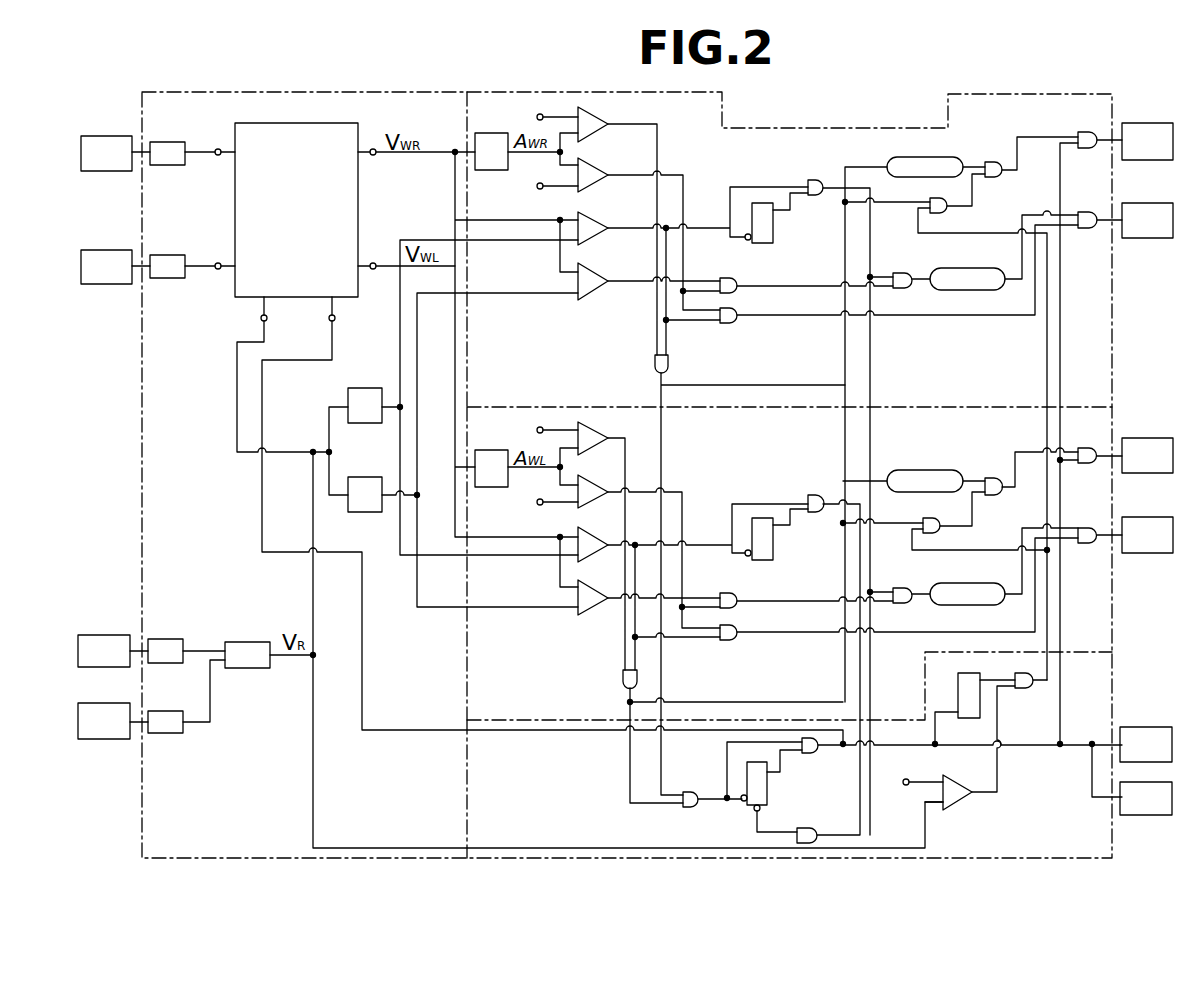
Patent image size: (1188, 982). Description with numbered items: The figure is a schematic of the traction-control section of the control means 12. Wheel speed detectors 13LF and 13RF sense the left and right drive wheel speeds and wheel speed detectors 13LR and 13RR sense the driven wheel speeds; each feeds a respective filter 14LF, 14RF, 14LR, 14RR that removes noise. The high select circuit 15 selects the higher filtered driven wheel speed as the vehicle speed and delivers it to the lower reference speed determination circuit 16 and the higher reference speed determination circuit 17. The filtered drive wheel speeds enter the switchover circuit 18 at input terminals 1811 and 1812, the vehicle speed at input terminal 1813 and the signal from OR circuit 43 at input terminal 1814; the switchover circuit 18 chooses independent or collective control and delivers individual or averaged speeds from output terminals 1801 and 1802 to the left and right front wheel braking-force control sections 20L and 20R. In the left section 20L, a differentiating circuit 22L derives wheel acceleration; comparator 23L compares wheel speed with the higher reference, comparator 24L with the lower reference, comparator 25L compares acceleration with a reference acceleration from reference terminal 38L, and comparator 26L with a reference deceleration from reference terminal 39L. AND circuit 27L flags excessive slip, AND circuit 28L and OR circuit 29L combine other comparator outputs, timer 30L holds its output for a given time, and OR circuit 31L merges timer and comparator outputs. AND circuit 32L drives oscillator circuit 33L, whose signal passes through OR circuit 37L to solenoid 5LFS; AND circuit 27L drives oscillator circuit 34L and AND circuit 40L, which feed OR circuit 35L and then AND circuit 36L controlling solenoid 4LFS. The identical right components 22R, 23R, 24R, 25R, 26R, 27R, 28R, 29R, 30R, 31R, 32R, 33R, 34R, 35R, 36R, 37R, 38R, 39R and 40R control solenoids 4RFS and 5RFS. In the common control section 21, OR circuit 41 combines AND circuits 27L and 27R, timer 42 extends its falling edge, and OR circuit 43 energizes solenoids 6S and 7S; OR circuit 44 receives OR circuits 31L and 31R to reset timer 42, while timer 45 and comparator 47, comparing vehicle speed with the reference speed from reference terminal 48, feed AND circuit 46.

The control means 12 is at (650, 866).
The wheel speed detector 13RF is at (112, 172).
The wheel speed detector 13LF is at (112, 285).
The wheel speed detector 13RR is at (122, 634).
The wheel speed detector 13LR is at (112, 740).
The filter 14RF is at (168, 165).
The filter 14LF is at (166, 278).
The filter 14RR is at (166, 639).
The filter 14LR is at (168, 733).
The high select circuit 15 is at (246, 642).
The lower reference speed determination circuit 16 is at (348, 508).
The higher reference speed determination circuit 17 is at (348, 395).
The switchover circuit 18 is at (300, 217).
The output terminal 1801 is at (373, 269).
The output terminal 1802 is at (373, 149).
The input terminal 1811 is at (216, 270).
The input terminal 1812 is at (218, 149).
The input terminal 1813 is at (261, 320).
The input terminal 1814 is at (335, 320).
The right front wheel braking-force control section 20R is at (466, 108).
The left front wheel braking-force control section 20L is at (466, 640).
The common control section 21 is at (466, 768).
The differentiating circuit 22R is at (491, 170).
The differentiating circuit 22L is at (491, 487).
The comparator 23R is at (602, 220).
The comparator 23L is at (602, 537).
The comparator 24R is at (602, 273).
The comparator 24L is at (602, 590).
The comparator 25R is at (602, 117).
The comparator 25L is at (602, 431).
The comparator 26R is at (602, 167).
The comparator 26L is at (602, 484).
The AND circuit 27R is at (670, 364).
The AND circuit 27L is at (620, 682).
The AND circuit 28R is at (738, 320).
The AND circuit 28L is at (738, 637).
The OR circuit 29R is at (738, 282).
The OR circuit 29L is at (738, 598).
The timer 30R is at (773, 238).
The timer 30L is at (773, 554).
The OR circuit 31R is at (812, 180).
The OR circuit 31L is at (812, 495).
The AND circuit 32R is at (903, 273).
The AND circuit 32L is at (900, 588).
The oscillator circuit 33R is at (965, 270).
The oscillator circuit 33L is at (958, 585).
The oscillator circuit 34R is at (915, 158).
The oscillator circuit 34L is at (915, 471).
The OR circuit 35R is at (990, 162).
The OR circuit 35L is at (990, 478).
The AND circuit 36R is at (1086, 132).
The AND circuit 36L is at (1087, 448).
The OR circuit 37R is at (1087, 212).
The OR circuit 37L is at (1087, 528).
The reference terminal 38R is at (537, 113).
The reference terminal 38L is at (537, 427).
The reference terminal 39R is at (538, 189).
The reference terminal 39L is at (538, 505).
The AND circuit 40R is at (943, 210).
The AND circuit 40L is at (928, 518).
The OR circuit 41 is at (690, 792).
The timer 42 is at (768, 795).
The OR circuit 43 is at (812, 753).
The OR circuit 44 is at (812, 828).
The timer 45 is at (958, 681).
The AND circuit 46 is at (1024, 688).
The comparator 47 is at (960, 798).
The reference terminal 48 is at (904, 785).
The solenoid of inlet solenoid valve 4RFS is at (1136, 160).
The solenoid of outlet solenoid valve 5RFS is at (1136, 238).
The solenoid of inlet solenoid valve 4LFS is at (1128, 438).
The solenoid of outlet solenoid valve 5LFS is at (1136, 553).
The solenoid of traction-controlling normally-closed solenoid valve 7S is at (1130, 727).
The solenoid of traction-controlling normally-opened solenoid valve 6S is at (1134, 815).